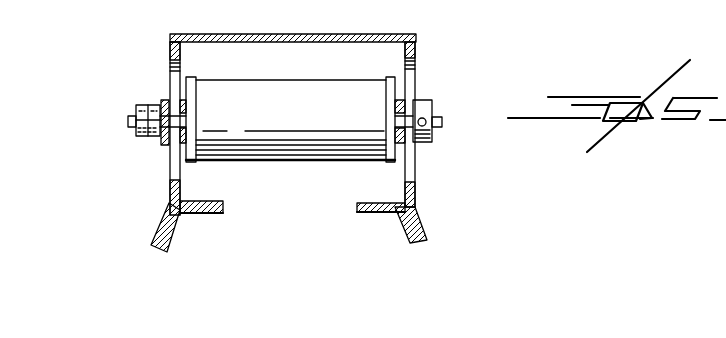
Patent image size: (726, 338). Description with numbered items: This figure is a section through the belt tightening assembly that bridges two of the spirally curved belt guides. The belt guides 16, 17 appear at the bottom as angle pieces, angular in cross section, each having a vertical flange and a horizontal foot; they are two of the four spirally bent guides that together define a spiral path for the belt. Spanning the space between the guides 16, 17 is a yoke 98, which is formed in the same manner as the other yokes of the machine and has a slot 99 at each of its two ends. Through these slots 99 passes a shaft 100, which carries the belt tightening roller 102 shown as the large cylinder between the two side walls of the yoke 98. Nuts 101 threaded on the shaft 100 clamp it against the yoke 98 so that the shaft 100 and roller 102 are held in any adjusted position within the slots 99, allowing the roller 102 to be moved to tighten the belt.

The yoke 98 is at (272, 34).
The slot 99 is at (176, 68).
The shaft 100 is at (131, 121).
The nut 101 is at (150, 138).
The belt tightening roller 102 is at (326, 150).
The belt guide 16 is at (201, 213).
The belt guide 17 is at (378, 212).